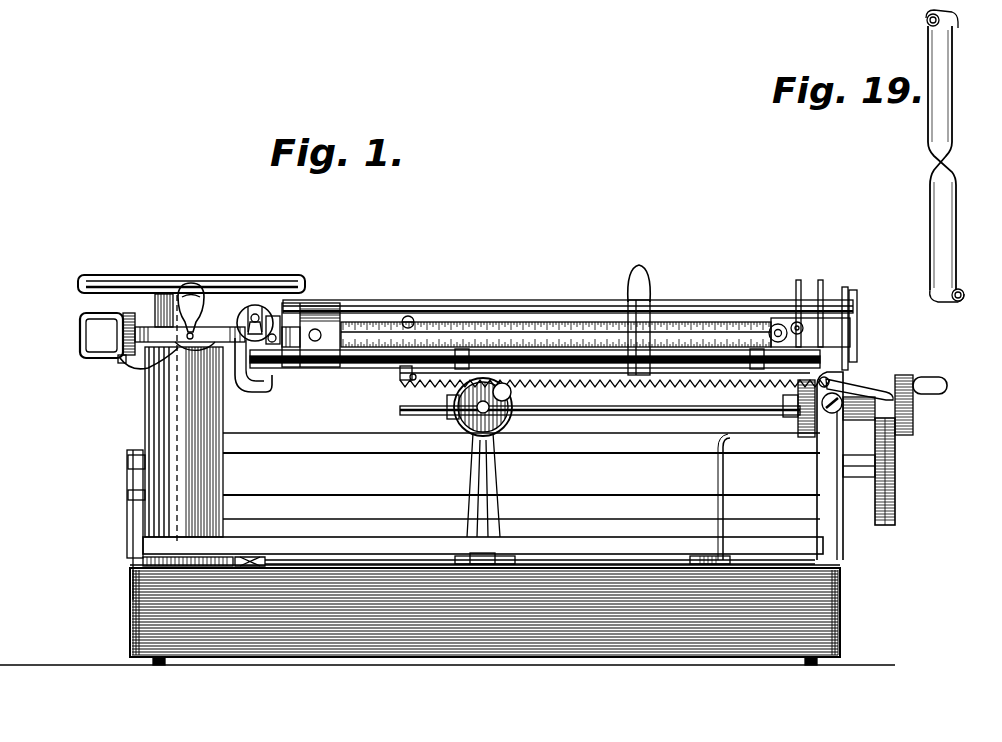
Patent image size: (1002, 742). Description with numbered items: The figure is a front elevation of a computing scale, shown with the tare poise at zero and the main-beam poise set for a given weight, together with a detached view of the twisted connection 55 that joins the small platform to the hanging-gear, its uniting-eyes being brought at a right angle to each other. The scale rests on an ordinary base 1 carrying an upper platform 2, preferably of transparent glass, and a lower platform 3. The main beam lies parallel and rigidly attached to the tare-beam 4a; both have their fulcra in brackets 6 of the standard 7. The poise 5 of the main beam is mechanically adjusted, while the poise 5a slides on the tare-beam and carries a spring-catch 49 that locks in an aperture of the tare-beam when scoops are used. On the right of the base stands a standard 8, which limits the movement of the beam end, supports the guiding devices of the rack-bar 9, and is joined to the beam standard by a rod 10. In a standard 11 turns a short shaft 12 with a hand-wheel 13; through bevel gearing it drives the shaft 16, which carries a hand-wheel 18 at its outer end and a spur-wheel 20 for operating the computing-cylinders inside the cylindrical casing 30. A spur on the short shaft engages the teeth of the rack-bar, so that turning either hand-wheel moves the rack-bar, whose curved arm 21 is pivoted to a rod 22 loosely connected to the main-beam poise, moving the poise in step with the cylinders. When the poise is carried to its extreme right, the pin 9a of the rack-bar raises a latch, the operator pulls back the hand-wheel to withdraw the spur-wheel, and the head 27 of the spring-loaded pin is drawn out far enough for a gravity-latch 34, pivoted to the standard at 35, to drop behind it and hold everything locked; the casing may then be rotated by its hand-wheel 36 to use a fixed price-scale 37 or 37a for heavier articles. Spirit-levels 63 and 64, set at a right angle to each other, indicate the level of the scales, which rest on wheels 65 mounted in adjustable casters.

In FIG. 1, the base 1 is at (128, 622).
In FIG. 1, the upper platform 2 is at (272, 282).
In FIG. 1, the lower platform 3 is at (260, 545).
In FIG. 1, the tare-beam 4a is at (789, 332).
In FIG. 1, the poise of the main beam 5 is at (620, 310).
In FIG. 1, the poise of the tare-beam 5a is at (318, 310).
In FIG. 1, the brackets 6 is at (266, 380).
In FIG. 1, the standard 7 is at (145, 418).
In FIG. 1, the standard 8 is at (825, 470).
In FIG. 1, the rack-bar 9 is at (608, 380).
In FIG. 1, the pin 9a is at (648, 290).
In FIG. 1, the rod 10 is at (370, 368).
In FIG. 1, the standard 11 is at (495, 472).
In FIG. 1, the short shaft 12 is at (447, 407).
In FIG. 1, the hand-wheel 13 is at (471, 430).
In FIG. 1, the shaft 16 is at (662, 407).
In FIG. 1, the hand-wheel 18 is at (913, 413).
In FIG. 1, the spur-wheel 20 is at (800, 440).
In FIG. 1, the curved arm 21 is at (408, 316).
In FIG. 1, the rod 22 is at (496, 320).
In FIG. 1, the head 27 is at (838, 418).
In FIG. 1, the cylindrical casing 30 is at (750, 303).
In FIG. 1, the gravity-latch 34 is at (860, 390).
In FIG. 1, the pivot 35 is at (831, 379).
In FIG. 1, the hand-wheel 36 is at (896, 492).
In FIG. 1, the fixed price-scale 37 is at (327, 433).
In FIG. 1, the fixed price-scale 37a is at (372, 492).
In FIG. 1, the spring-catch 49 is at (315, 342).
In FIG. 1, the connection 55 is at (175, 348).
In FIG. 19, the connection 55 is at (948, 89).
In FIG. 1, the spirit-level 63 is at (256, 558).
In FIG. 1, the spirit-level 64 is at (360, 560).
In FIG. 1, the wheels 65 is at (162, 666).